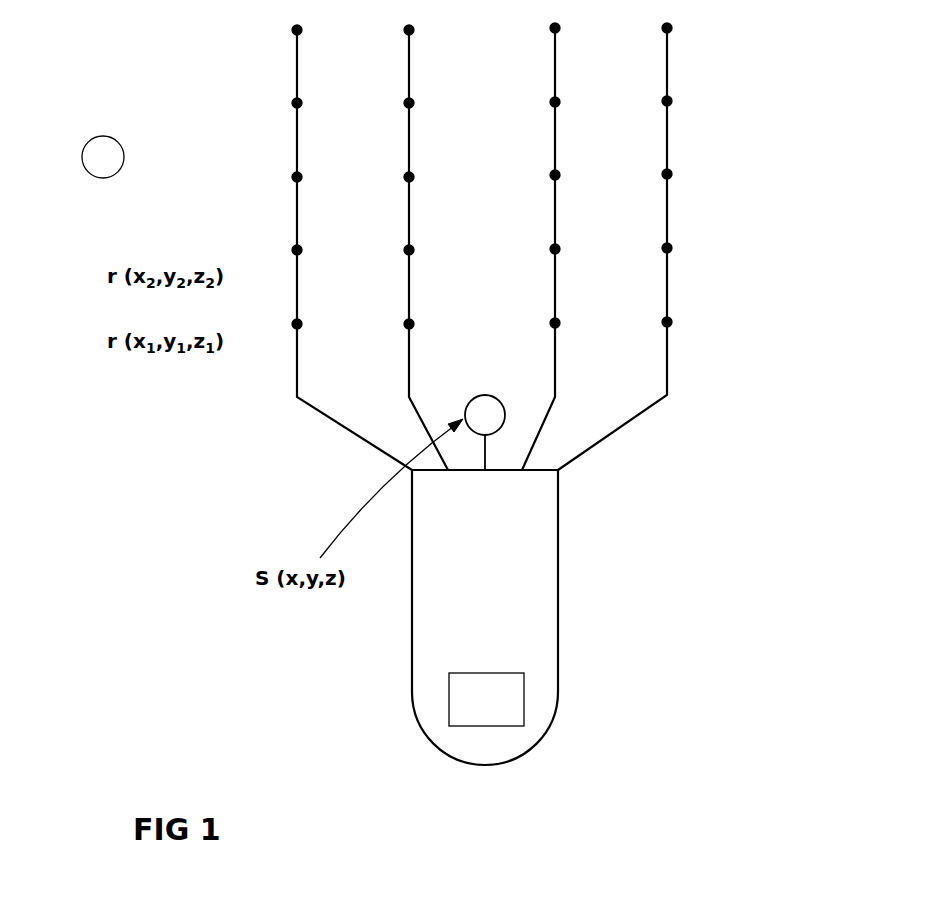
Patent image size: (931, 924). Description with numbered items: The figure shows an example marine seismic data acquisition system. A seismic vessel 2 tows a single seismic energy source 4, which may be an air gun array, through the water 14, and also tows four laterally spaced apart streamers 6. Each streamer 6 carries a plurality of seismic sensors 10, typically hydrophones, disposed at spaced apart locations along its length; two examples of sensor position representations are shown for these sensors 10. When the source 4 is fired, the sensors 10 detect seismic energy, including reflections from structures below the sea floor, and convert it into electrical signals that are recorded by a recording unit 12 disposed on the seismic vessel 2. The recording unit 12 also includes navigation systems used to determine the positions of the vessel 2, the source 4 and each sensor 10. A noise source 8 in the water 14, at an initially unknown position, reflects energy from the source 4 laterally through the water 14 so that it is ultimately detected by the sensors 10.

The seismic vessel 2 is at (559, 616).
The seismic energy source 4 is at (483, 395).
The streamer 6 is at (318, 413).
The noise source 8 is at (92, 175).
The seismic sensor 10 is at (259, 324).
The recording unit 12 is at (449, 699).
The water 14 is at (851, 215).